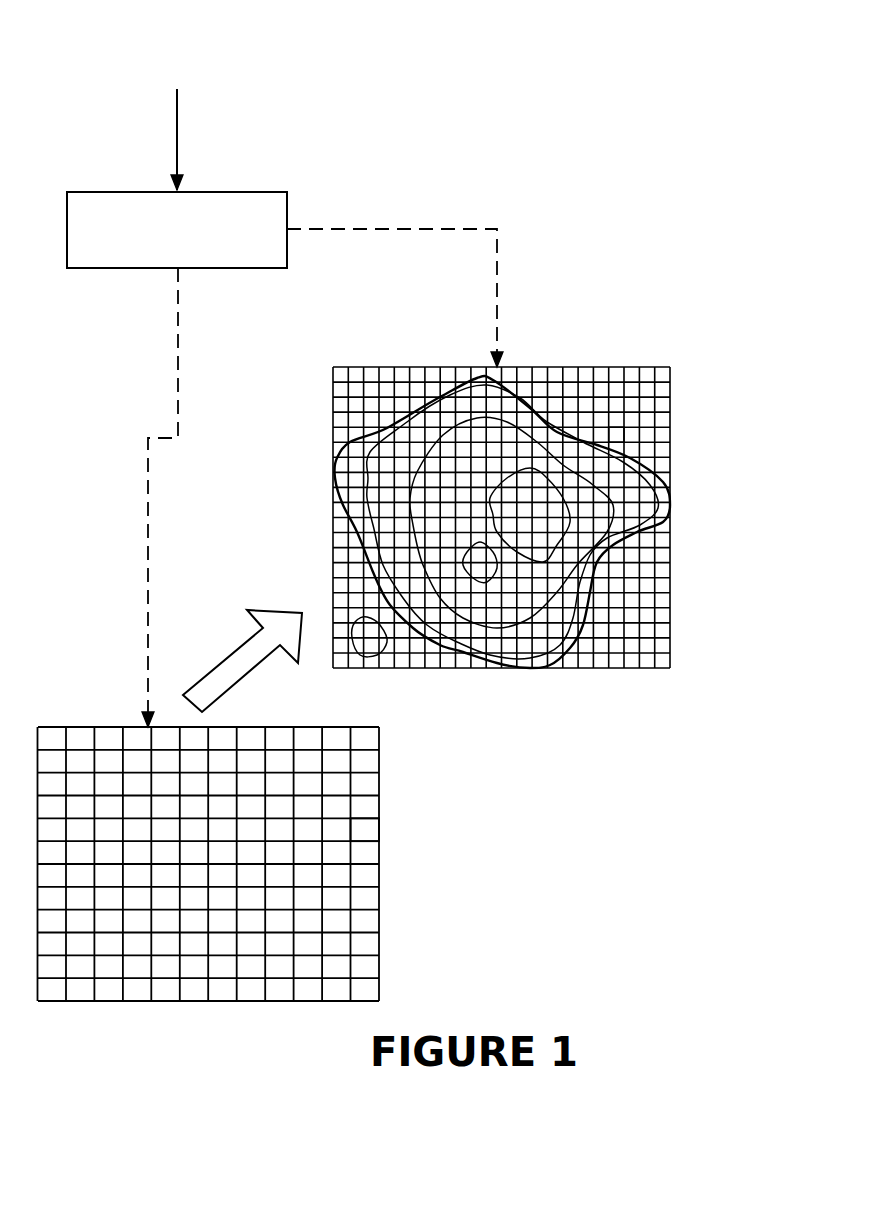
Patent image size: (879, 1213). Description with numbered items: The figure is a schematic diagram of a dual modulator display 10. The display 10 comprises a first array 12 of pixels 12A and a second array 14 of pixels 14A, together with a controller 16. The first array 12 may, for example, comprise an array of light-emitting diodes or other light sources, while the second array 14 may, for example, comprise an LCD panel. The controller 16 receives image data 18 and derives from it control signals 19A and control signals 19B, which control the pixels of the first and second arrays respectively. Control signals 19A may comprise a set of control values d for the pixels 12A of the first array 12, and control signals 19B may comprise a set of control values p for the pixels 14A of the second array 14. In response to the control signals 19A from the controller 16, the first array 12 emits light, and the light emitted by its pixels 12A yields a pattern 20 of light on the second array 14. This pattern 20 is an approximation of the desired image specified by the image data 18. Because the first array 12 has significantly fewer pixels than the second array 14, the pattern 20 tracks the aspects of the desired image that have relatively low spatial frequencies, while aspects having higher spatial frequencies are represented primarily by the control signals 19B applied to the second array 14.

The display 10 is at (627, 88).
The first array 12 is at (380, 777).
The pixels of first array 12A is at (361, 823).
The second array 14 is at (593, 363).
The pixels of second array 14A is at (618, 437).
The controller 16 is at (247, 192).
The image data 18 is at (177, 127).
The control signals 19A is at (140, 470).
The control signals 19B is at (418, 230).
The pattern of light 20 is at (667, 527).